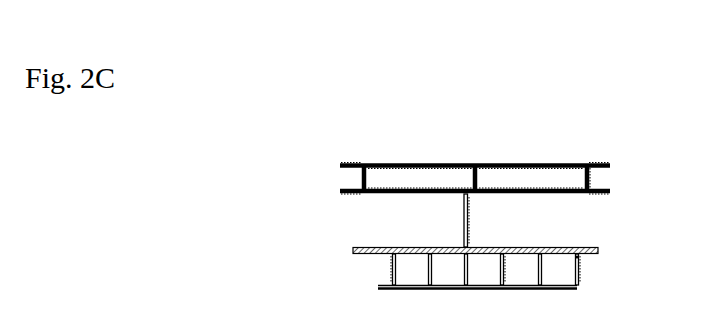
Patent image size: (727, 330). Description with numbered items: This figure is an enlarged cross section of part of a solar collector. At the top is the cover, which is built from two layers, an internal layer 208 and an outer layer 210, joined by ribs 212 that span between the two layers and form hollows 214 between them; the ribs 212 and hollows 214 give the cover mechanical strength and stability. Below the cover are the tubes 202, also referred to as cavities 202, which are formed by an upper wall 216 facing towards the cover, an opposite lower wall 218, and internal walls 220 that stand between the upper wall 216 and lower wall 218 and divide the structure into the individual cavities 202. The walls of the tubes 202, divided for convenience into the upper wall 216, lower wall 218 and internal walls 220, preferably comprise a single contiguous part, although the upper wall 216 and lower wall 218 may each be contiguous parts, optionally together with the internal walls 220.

The tubes 202 is at (420, 270).
The internal layer 208 is at (375, 192).
The outer layer 210 is at (373, 166).
The ribs 212 is at (478, 178).
The hollows 214 is at (413, 178).
The upper wall 216 is at (593, 247).
The lower wall 218 is at (565, 290).
The internal walls 220 is at (495, 270).